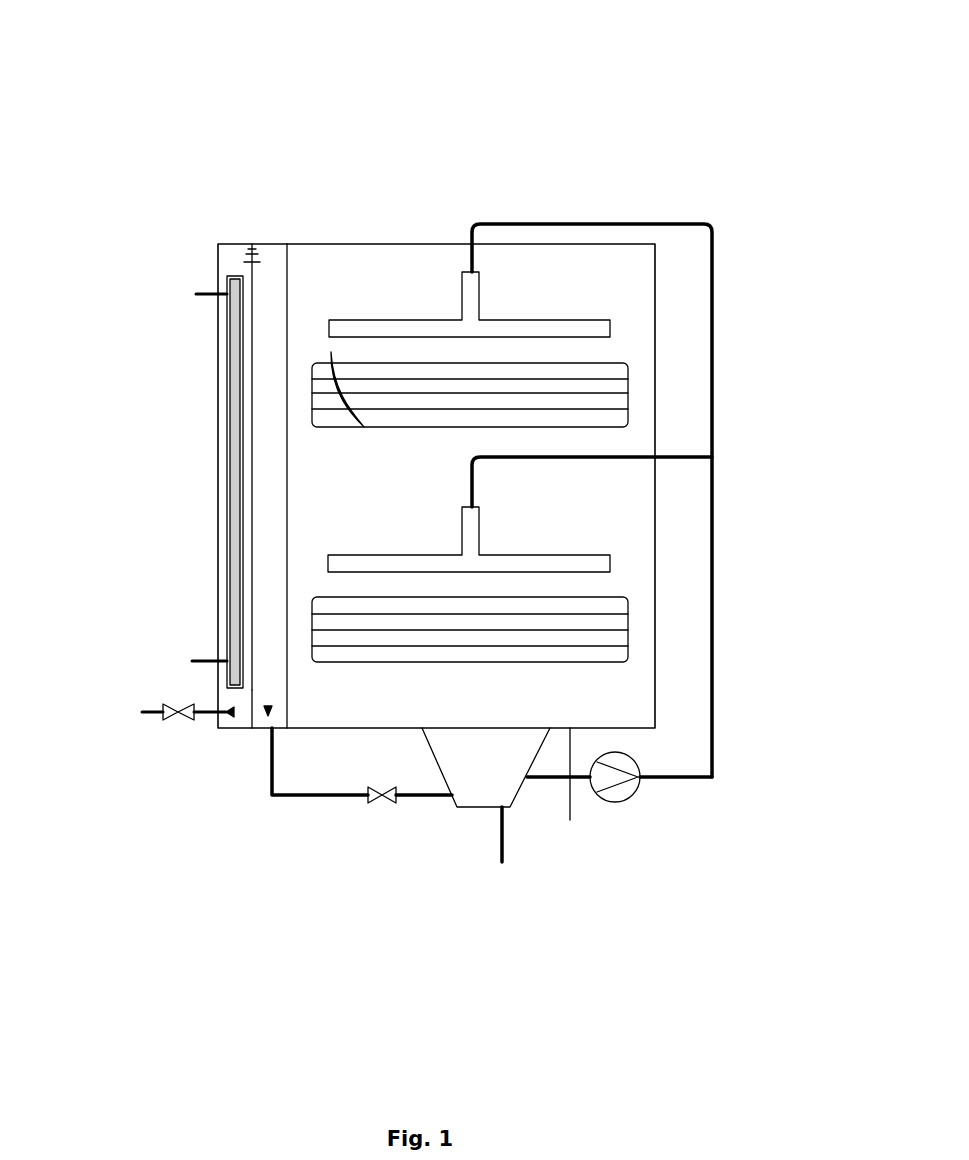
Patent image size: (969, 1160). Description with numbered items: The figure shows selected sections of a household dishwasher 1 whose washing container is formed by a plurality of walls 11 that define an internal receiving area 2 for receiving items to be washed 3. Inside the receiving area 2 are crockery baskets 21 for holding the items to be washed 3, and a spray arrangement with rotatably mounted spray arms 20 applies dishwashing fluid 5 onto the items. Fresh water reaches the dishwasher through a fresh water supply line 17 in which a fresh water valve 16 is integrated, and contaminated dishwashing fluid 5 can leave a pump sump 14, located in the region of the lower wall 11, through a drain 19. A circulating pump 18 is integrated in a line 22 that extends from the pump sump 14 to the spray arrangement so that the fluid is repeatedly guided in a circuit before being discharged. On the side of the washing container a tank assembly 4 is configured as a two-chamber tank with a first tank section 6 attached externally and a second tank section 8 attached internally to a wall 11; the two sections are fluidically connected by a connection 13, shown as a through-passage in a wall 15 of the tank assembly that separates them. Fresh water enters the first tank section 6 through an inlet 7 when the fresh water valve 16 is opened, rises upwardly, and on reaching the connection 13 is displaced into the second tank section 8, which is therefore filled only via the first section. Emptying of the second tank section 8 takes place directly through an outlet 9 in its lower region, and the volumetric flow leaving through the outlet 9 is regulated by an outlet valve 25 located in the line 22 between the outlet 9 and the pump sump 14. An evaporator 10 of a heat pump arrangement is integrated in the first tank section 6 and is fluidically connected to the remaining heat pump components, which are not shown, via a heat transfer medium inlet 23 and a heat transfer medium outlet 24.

The household dishwasher 1 is at (191, 99).
The receiving area 2 is at (325, 244).
The items to be washed 3 is at (351, 428).
The tank assembly 4 is at (217, 247).
The dishwashing fluid 5 is at (407, 703).
The first tank section 6 is at (217, 490).
The inlet 7 is at (230, 718).
The second tank section 8 is at (272, 302).
The outlet 9 is at (268, 710).
The evaporator 10 is at (234, 572).
The walls 11 is at (420, 244).
The connection 13 is at (259, 244).
The pump sump 14 is at (472, 793).
The wall of the tank assembly 15 is at (249, 700).
The fresh water valve 16 is at (167, 722).
The fresh water supply line 17 is at (147, 711).
The circulating pump 18 is at (623, 793).
The drain 19 is at (502, 860).
The spray arms 20 is at (612, 327).
The crockery baskets 21 is at (630, 390).
The line 22 is at (292, 797).
The heat transfer medium inlet 23 is at (192, 661).
The heat transfer medium outlet 24 is at (196, 294).
The outlet valve 25 is at (368, 800).